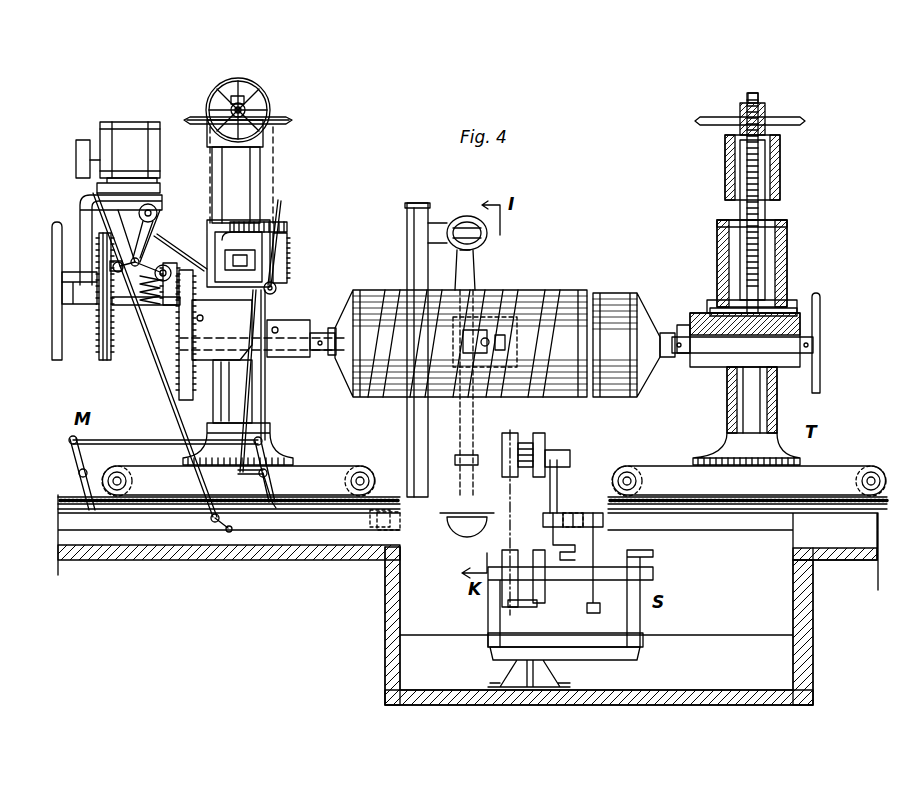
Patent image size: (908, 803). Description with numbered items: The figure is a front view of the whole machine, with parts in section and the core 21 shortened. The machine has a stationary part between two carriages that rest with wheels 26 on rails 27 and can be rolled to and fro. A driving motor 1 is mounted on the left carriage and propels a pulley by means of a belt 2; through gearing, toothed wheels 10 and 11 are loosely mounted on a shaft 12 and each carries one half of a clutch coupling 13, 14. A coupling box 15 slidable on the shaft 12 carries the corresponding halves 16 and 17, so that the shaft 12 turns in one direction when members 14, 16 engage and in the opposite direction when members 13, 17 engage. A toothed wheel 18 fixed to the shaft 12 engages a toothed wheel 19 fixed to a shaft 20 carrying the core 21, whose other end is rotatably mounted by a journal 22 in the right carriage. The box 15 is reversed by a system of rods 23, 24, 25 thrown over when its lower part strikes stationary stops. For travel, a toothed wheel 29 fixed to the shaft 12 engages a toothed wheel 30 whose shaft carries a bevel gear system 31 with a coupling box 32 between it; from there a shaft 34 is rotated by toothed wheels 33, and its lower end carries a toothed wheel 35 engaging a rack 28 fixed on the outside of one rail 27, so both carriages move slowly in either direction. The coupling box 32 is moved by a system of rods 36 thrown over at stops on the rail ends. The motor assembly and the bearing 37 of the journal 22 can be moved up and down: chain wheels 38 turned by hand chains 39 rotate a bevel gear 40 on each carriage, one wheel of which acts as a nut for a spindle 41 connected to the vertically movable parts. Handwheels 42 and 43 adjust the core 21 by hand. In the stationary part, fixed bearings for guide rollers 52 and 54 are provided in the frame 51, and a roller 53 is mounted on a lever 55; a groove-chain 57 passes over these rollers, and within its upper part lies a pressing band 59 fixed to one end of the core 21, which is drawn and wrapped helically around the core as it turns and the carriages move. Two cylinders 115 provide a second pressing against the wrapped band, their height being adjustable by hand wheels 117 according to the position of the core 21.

The driving motor 1 is at (142, 124).
The belt 2 is at (78, 170).
The toothed wheel 10 is at (196, 262).
The toothed wheel 11 is at (95, 305).
The shaft 12 is at (150, 307).
The clutch coupling half 13 is at (168, 306).
The clutch coupling half 14 is at (99, 316).
The coupling box 15 is at (142, 302).
The coupling half 16 is at (101, 342).
The coupling half 17 is at (140, 264).
The toothed wheel 18 is at (168, 268).
The toothed wheel 19 is at (175, 413).
The shaft 20 is at (178, 380).
The core 21 is at (340, 393).
The journal 22 is at (690, 356).
The rod 23 is at (158, 210).
The rod 24 is at (92, 216).
The rod 25 is at (214, 523).
The wheels 26 is at (110, 496).
The rails 27 is at (58, 498).
The rack 28 is at (166, 507).
The toothed wheel 29 is at (277, 291).
The toothed wheel 30 is at (288, 253).
The bevel gear system 31 is at (232, 233).
The coupling box 32 is at (228, 312).
The toothed wheels 33 is at (274, 222).
The shaft 34 is at (270, 178).
The toothed wheel 35 is at (266, 506).
The rods 36 is at (268, 340).
The bearing 37 is at (697, 318).
The chain wheels 38 is at (269, 108).
The hand chains 39 is at (274, 150).
The bevel gear 40 is at (206, 118).
The spindle 41 is at (246, 103).
The handwheel 42 is at (812, 382).
The handwheel 43 is at (57, 362).
The frame 51 is at (608, 618).
The guide roller 52 is at (504, 440).
The roller 53 is at (560, 470).
The guide roller 54 is at (528, 545).
The lever 55 is at (586, 501).
The groove-chain 57 is at (516, 607).
The pressing band 59 is at (522, 308).
The cylinders 115 is at (516, 340).
The hand wheels 117 is at (465, 216).